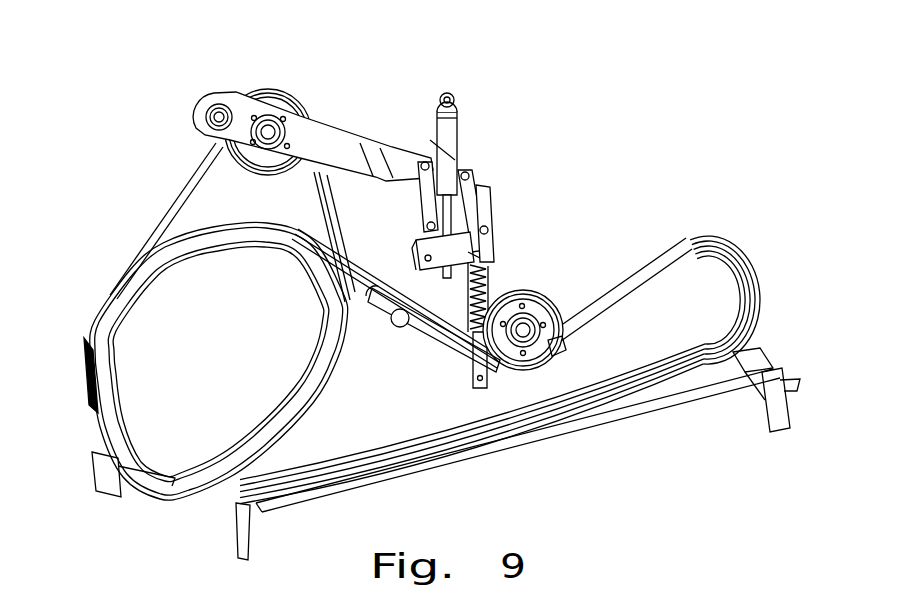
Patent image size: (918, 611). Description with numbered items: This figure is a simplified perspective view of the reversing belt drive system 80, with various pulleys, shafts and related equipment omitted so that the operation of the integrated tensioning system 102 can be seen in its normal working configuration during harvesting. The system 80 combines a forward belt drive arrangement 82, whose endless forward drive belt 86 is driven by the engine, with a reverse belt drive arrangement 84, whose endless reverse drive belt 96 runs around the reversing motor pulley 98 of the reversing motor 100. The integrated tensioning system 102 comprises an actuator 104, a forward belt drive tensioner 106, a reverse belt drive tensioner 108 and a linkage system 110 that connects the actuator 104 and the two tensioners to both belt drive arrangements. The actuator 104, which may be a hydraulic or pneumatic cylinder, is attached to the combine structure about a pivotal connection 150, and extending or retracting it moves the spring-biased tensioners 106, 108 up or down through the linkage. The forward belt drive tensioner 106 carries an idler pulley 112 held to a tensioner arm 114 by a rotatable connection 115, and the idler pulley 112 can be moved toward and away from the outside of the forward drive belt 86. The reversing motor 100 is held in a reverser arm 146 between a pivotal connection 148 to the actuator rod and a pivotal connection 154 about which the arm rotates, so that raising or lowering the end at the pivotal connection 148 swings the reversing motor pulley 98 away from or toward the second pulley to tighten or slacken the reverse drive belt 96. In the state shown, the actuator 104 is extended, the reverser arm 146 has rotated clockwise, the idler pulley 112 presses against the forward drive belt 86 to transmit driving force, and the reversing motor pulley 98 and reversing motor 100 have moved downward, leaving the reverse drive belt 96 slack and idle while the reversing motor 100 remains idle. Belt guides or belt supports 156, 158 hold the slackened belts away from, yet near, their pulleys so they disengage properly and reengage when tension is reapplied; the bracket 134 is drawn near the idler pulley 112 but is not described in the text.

The reversing belt drive system 80 is at (632, 160).
The forward belt drive arrangement 82 is at (764, 272).
The reverse belt drive arrangement 84 is at (277, 72).
The forward drive belt 86 is at (668, 248).
The reverse drive belt 96 is at (145, 244).
The reversing motor pulley 98 is at (296, 97).
The reversing motor 100 is at (262, 142).
The integrated tensioning system 102 is at (530, 130).
The actuator 104 is at (458, 135).
The forward belt drive tensioner 106 is at (512, 262).
The reverse belt drive tensioner 108 is at (410, 202).
The linkage system 110 is at (492, 190).
The idler pulley 112 is at (520, 294).
The tensioner arm 114 is at (446, 352).
The rotatable connection 115 is at (532, 318).
The pulley bracket 134 is at (560, 342).
The reverser arm 146 is at (320, 215).
The pivotal connection 148 is at (418, 160).
The pivotal connection 150 is at (442, 92).
The pivotal connection 154 is at (205, 126).
The belt guide 156 is at (88, 386).
The belt guide 158 is at (462, 452).